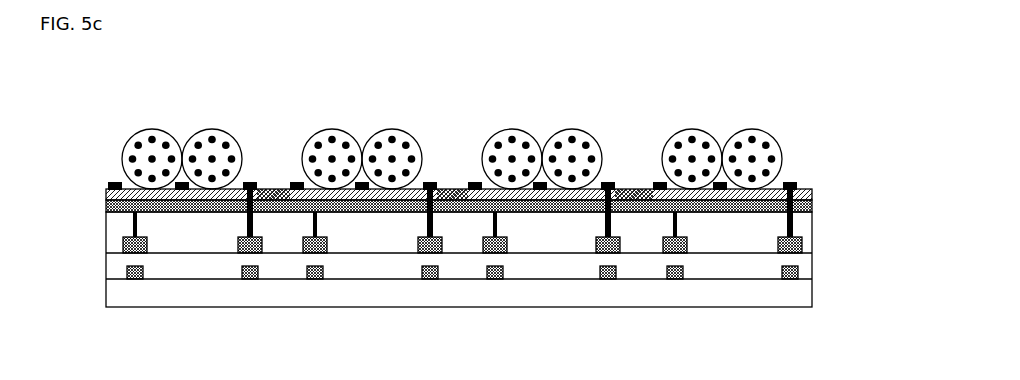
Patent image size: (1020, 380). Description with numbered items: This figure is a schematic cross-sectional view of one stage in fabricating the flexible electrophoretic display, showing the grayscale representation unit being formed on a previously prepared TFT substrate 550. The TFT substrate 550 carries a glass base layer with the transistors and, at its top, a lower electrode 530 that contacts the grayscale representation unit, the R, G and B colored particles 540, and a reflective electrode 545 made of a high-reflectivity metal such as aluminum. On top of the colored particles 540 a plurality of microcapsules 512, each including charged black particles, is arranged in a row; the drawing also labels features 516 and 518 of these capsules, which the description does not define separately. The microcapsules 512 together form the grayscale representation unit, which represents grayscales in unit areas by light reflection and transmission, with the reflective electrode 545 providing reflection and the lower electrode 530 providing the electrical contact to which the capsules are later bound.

The microcapsules 512 is at (213, 129).
The insulating shell of conductive ball 516 is at (241, 148).
The conductive ball 518 is at (157, 130).
The lower electrode 530 is at (790, 181).
The colored particles 540 is at (813, 191).
The reflective electrode 545 is at (106, 208).
The TFT substrate 550 is at (813, 190).